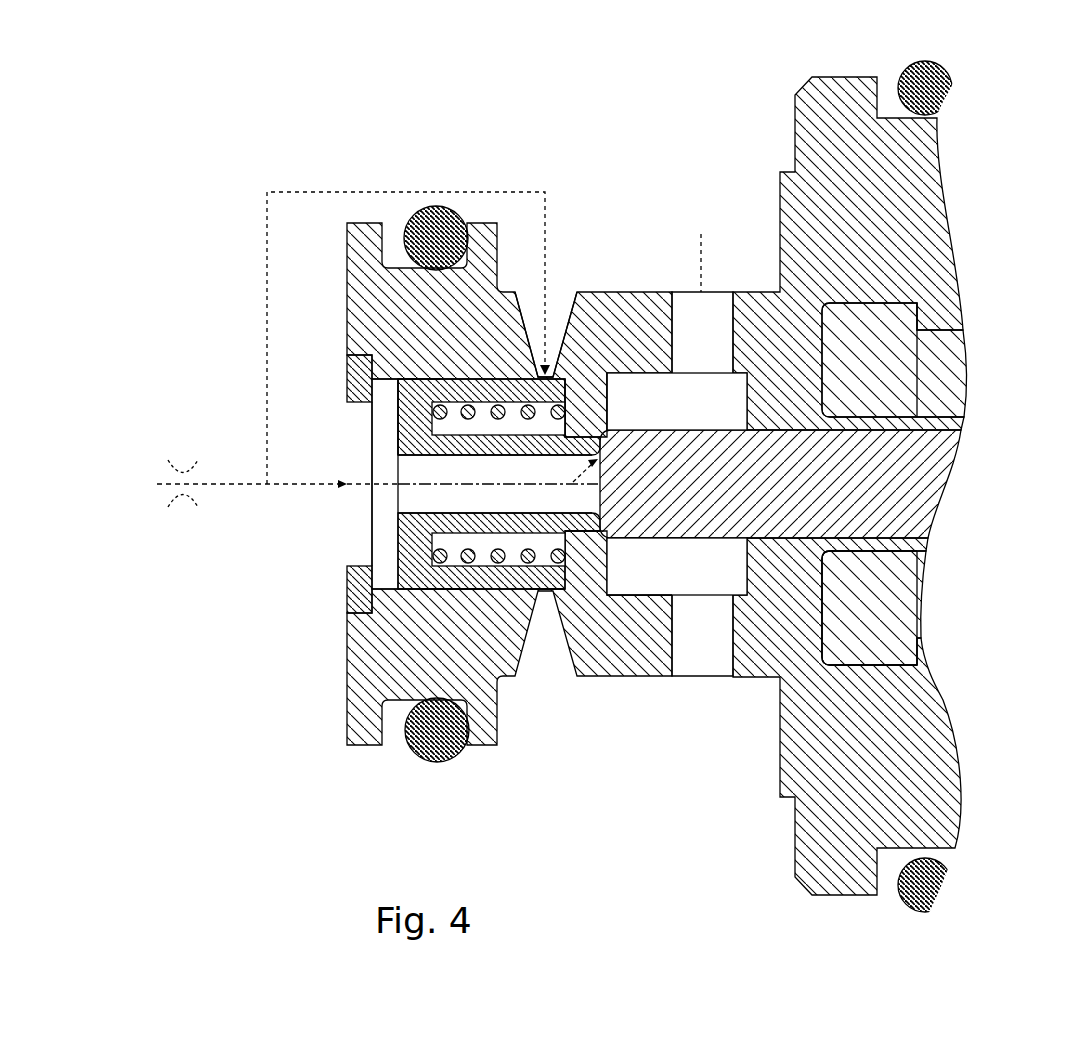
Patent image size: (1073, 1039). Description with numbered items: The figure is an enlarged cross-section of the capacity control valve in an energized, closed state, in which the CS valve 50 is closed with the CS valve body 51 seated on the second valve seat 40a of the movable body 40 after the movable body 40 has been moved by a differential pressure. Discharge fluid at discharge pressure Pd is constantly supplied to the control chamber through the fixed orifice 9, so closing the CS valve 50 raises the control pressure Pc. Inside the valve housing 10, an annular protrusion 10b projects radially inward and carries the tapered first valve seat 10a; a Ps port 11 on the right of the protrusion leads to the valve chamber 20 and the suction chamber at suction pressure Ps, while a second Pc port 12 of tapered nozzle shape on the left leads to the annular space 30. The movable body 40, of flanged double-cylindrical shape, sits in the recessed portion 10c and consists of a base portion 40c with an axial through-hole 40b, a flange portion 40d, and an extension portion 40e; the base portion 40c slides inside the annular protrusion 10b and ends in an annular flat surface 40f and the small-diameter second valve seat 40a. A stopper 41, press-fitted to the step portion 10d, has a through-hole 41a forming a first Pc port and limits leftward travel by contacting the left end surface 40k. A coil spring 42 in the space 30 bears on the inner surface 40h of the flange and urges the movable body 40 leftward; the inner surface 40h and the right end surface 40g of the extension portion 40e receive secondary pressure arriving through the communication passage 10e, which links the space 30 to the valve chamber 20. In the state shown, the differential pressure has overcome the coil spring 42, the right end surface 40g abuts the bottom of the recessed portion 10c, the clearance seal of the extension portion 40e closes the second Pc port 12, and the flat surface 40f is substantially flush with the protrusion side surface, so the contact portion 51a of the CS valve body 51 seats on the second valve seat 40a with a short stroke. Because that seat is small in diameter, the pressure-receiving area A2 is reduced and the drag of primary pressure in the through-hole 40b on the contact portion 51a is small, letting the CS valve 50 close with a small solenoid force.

The fixed orifice 9 is at (183, 478).
The valve housing 10 is at (347, 300).
The first valve seat 10a is at (612, 595).
The annular protrusion 10b is at (585, 395).
The recessed portion 10c is at (400, 385).
The step portion 10d is at (345, 375).
The communication passage 10e is at (607, 430).
The Ps port 11 is at (717, 313).
The second Pc port 12 is at (537, 290).
The valve chamber 20 is at (650, 403).
The space 30 is at (460, 420).
The movable body 40 is at (397, 528).
The second valve seat 40a is at (607, 530).
The through-hole 40b is at (395, 477).
The base portion 40c is at (462, 592).
The flange portion 40d is at (413, 592).
The extension portion 40e is at (545, 592).
The flat surface 40f is at (612, 540).
The axially right end surface 40g is at (585, 592).
The inner surface 40h is at (440, 592).
The axially left end surface 40k is at (397, 430).
The stopper 41 is at (347, 593).
The through-hole 41a is at (372, 558).
The coil spring 42 is at (437, 762).
The CS valve 50 is at (633, 555).
The CS valve body 51 is at (887, 417).
The contact portion 51a is at (833, 557).
The discharge pressure Pd is at (236, 488).
The control pressure Pc is at (307, 488).
The suction pressure Ps is at (701, 251).
The pressure-receiving area A2 is at (612, 440).